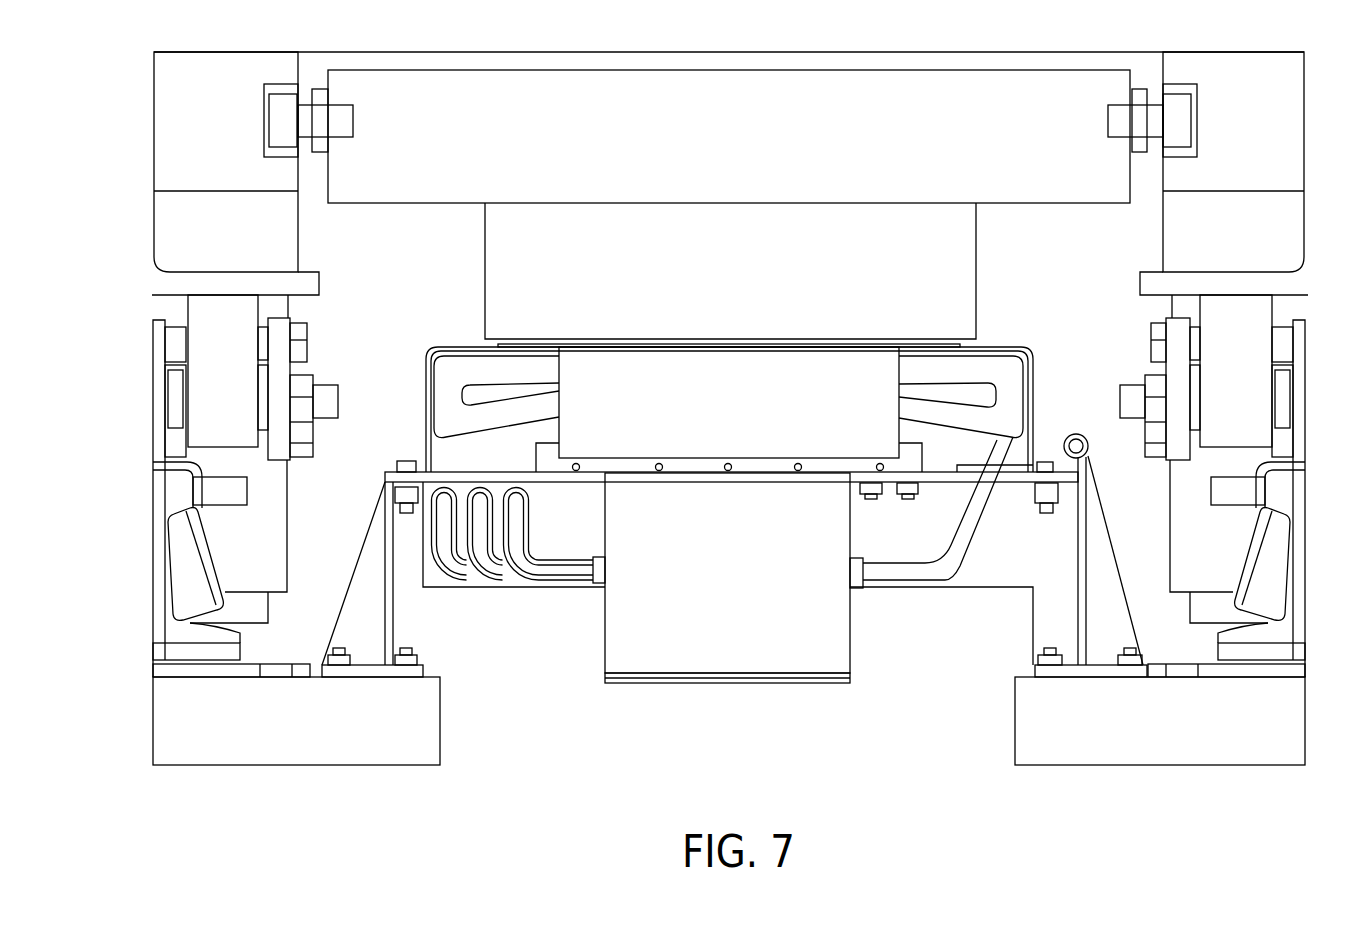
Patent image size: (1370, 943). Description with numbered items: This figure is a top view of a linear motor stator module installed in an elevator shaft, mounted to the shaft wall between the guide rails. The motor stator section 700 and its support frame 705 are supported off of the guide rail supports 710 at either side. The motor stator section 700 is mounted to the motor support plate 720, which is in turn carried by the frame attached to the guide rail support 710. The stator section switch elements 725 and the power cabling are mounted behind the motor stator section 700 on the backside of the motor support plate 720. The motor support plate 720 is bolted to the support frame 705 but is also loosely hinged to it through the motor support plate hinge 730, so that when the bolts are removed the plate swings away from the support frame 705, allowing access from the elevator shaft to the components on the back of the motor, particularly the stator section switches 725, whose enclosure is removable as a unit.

The motor stator section 700 is at (733, 368).
The support frame 705 is at (1013, 566).
The guide rail support 710 is at (310, 742).
The motor support plate 720 is at (1062, 470).
The stator section switch elements 725 is at (740, 577).
The motor support plate hinge 730 is at (1088, 444).